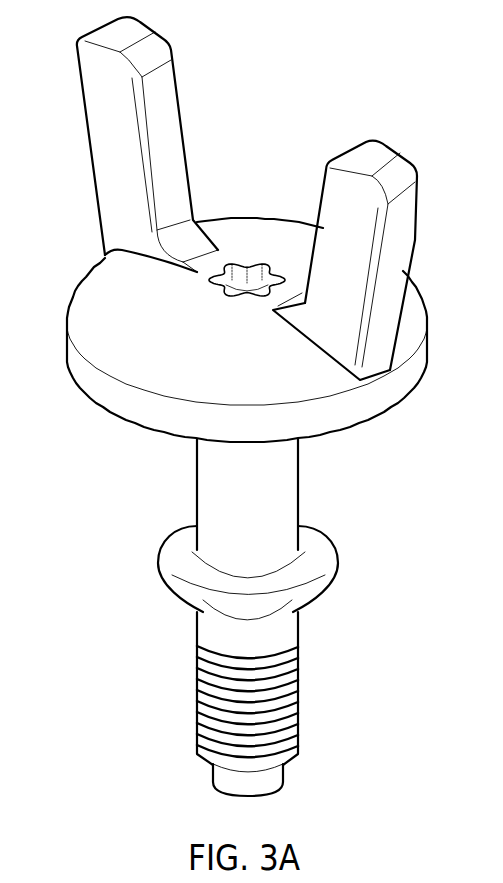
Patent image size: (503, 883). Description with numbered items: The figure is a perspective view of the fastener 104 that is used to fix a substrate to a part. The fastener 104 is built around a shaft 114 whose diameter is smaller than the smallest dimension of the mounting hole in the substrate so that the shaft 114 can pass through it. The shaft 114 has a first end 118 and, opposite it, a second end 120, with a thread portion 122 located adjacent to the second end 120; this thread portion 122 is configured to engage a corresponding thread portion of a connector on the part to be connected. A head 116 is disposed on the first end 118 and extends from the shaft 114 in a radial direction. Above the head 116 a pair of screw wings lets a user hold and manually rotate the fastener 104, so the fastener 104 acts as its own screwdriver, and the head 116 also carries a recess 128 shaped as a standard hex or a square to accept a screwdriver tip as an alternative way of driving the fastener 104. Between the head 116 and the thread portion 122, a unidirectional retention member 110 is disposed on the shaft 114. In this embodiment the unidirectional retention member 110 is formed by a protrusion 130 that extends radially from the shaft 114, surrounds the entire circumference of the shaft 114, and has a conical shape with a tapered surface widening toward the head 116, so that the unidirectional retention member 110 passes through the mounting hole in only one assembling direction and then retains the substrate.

The fastener 104 is at (277, 409).
The unidirectional retention member 110 is at (321, 574).
The shaft 114 is at (269, 620).
The head 116 is at (412, 376).
The first end 118 is at (303, 445).
The second end 120 is at (284, 773).
The thread portion 122 is at (289, 708).
The recess 128 is at (220, 287).
The protrusion 130 is at (339, 540).